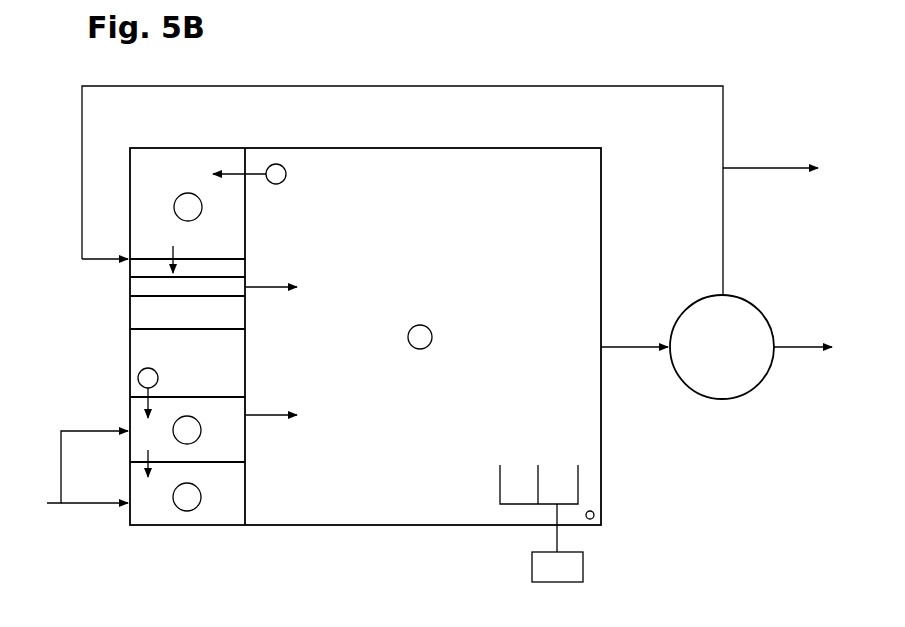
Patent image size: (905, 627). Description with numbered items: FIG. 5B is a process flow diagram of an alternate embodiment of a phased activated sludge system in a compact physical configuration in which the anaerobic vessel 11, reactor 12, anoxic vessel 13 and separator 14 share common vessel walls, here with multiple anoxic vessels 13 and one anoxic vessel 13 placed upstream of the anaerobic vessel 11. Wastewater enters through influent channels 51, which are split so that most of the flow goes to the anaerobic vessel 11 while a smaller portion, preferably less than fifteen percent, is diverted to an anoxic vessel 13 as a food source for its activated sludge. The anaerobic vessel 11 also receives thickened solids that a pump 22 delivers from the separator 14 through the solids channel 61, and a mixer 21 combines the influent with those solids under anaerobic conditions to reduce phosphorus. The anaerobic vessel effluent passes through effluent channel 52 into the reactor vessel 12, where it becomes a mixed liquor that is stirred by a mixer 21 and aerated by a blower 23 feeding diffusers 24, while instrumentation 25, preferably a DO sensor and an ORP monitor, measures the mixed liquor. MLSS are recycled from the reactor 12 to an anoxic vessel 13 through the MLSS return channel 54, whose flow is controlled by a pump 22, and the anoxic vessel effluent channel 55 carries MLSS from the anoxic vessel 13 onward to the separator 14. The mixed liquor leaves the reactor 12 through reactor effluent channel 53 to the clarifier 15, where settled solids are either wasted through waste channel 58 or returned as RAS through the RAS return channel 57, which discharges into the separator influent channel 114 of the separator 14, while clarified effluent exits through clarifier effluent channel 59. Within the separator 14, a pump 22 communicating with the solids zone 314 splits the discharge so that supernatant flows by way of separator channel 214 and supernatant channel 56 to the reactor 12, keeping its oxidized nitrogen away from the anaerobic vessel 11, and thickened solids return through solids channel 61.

The anaerobic vessel 11 is at (145, 518).
The reactor vessel 12 is at (592, 190).
The anoxic vessel 13 is at (140, 202).
The separator 14 is at (133, 337).
The separator influent channel 114 is at (133, 277).
The separator channel 214 is at (133, 295).
The solids zone 314 is at (140, 360).
The clarifier 15 is at (755, 390).
The mixer 21 is at (186, 193).
The pump 22 is at (276, 164).
The blower 23 is at (583, 575).
The diffusers 24 is at (502, 483).
The instrumentation 25 is at (596, 513).
The influent channel 51 is at (76, 431).
The effluent channel 52 is at (272, 417).
The reactor effluent channel 53 is at (630, 347).
The MLSS return channel 54 is at (240, 174).
The anoxic vessel effluent channel 55 is at (173, 246).
The supernatant channel 56 is at (277, 285).
The RAS return channel 57 is at (420, 86).
The waste channel 58 is at (760, 168).
The clarifier effluent channel 59 is at (790, 347).
The solids channel 61 is at (142, 404).